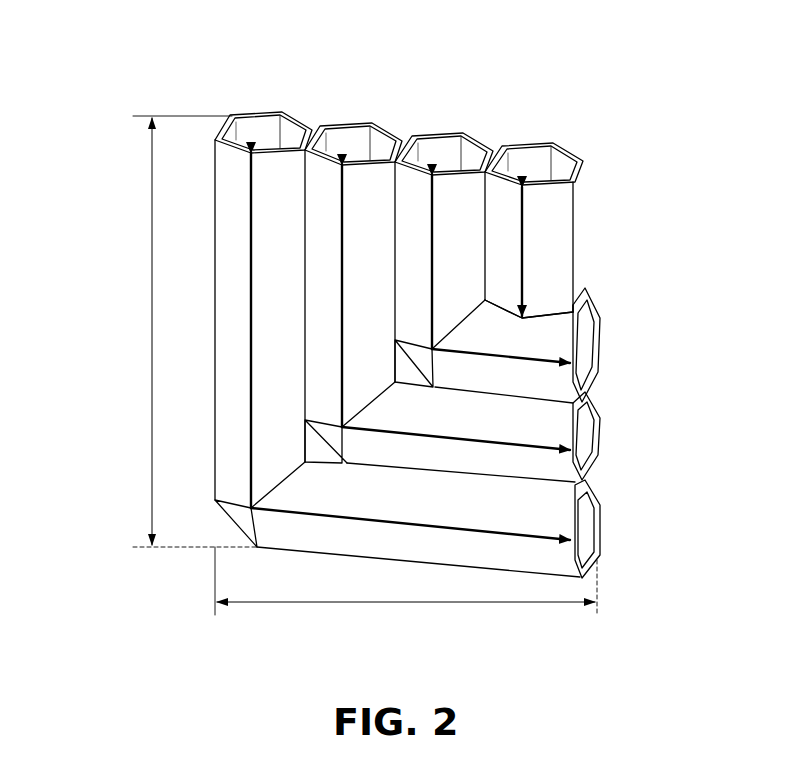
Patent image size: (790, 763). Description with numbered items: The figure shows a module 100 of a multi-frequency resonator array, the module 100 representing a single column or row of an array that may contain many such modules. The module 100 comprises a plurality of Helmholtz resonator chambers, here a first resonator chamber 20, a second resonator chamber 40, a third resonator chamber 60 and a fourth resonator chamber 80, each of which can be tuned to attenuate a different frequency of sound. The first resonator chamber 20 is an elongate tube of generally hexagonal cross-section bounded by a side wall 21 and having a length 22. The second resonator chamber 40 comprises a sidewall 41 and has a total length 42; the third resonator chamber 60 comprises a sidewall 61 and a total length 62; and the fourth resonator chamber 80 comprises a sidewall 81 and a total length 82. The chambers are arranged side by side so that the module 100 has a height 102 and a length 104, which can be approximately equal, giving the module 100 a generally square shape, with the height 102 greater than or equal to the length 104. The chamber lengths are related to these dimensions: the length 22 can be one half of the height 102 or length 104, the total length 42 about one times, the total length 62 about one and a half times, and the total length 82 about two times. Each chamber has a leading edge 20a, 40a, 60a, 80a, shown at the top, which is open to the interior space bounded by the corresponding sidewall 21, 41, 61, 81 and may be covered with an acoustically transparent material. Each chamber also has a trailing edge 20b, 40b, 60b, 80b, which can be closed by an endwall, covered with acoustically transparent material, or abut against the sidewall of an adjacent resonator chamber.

The module 100 is at (115, 100).
The first resonator chamber 20 is at (535, 108).
The leading edge of first resonator chamber 20a is at (553, 152).
The trailing edge of first resonator chamber 20b is at (572, 302).
The side wall 21 is at (590, 172).
The length 22 is at (525, 240).
The second resonator chamber 40 is at (440, 100).
The leading edge of second resonator chamber 40a is at (478, 133).
The trailing edge of second resonator chamber 40b is at (600, 350).
The sidewall 41 is at (590, 322).
The total length 42 is at (507, 358).
The third resonator chamber 60 is at (347, 98).
The leading edge of third resonator chamber 60a is at (388, 127).
The trailing edge of third resonator chamber 60b is at (600, 440).
The sidewall 61 is at (590, 410).
The total length 62 is at (438, 440).
The fourth resonator chamber 80 is at (258, 88).
The leading edge of fourth resonator chamber 80a is at (290, 115).
The trailing edge of fourth resonator chamber 80b is at (600, 530).
The sidewall 81 is at (590, 498).
The total length 82 is at (357, 520).
The height 102 is at (150, 328).
The length 104 is at (405, 603).